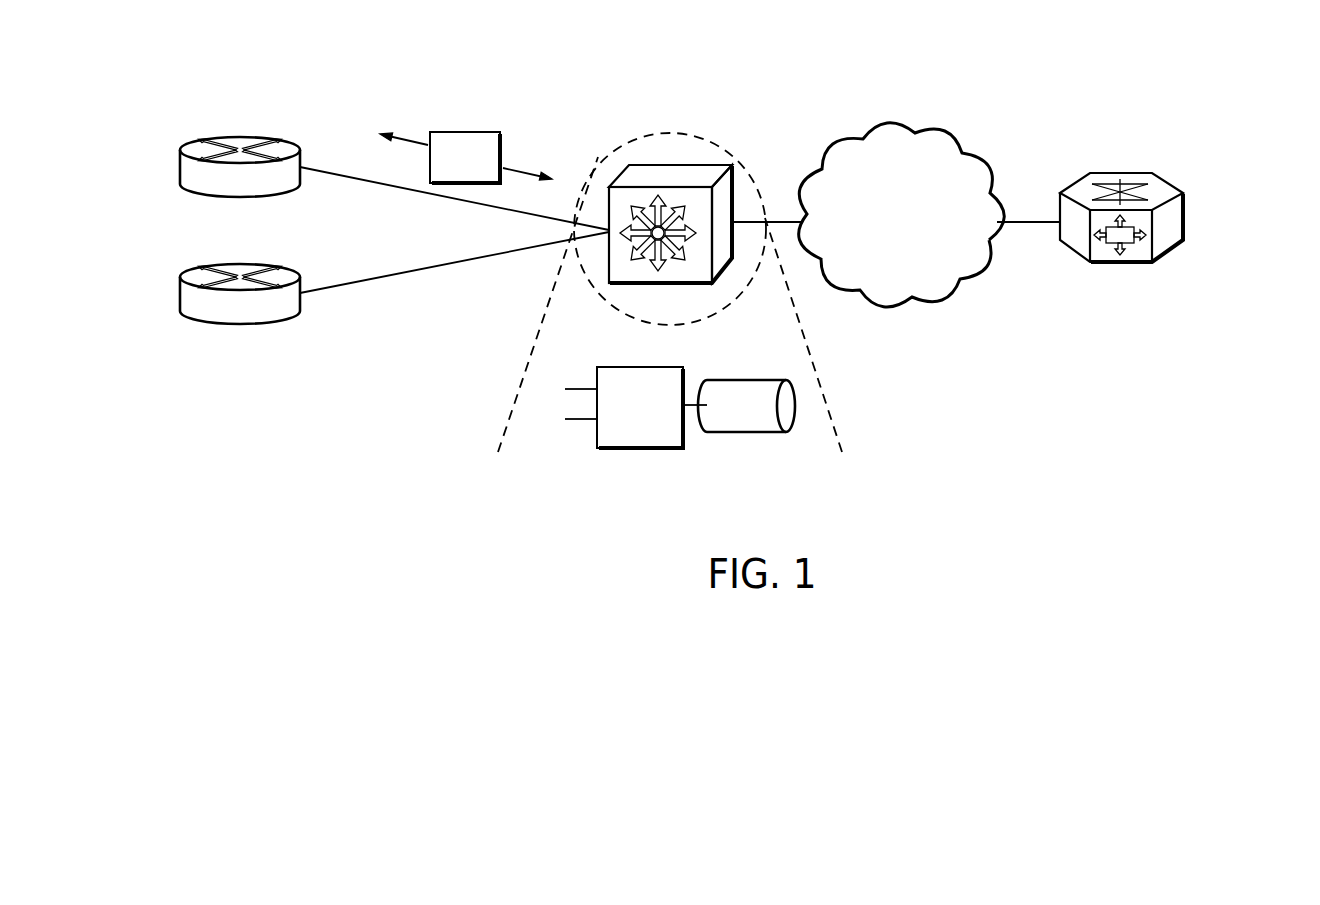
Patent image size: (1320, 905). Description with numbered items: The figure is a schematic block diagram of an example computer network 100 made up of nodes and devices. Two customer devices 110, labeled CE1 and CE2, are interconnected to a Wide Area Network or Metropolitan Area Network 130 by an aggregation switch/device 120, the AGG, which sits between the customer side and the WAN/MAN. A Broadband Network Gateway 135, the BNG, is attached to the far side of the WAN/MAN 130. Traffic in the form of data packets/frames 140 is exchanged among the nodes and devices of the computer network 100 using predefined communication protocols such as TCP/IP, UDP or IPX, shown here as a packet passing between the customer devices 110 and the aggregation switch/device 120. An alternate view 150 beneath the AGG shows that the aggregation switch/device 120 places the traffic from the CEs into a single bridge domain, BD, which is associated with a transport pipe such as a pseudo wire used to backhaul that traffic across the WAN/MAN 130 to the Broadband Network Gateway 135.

The computer network 100 is at (932, 44).
The customer devices 110 is at (163, 104).
The aggregation switch/device 120 is at (602, 167).
The Wide Area Network or Metropolitan Area Network 130 is at (883, 243).
The Broadband Network Gateway 135 is at (1192, 204).
The data packets/frames 140 is at (447, 172).
The alternate view 150 is at (841, 411).